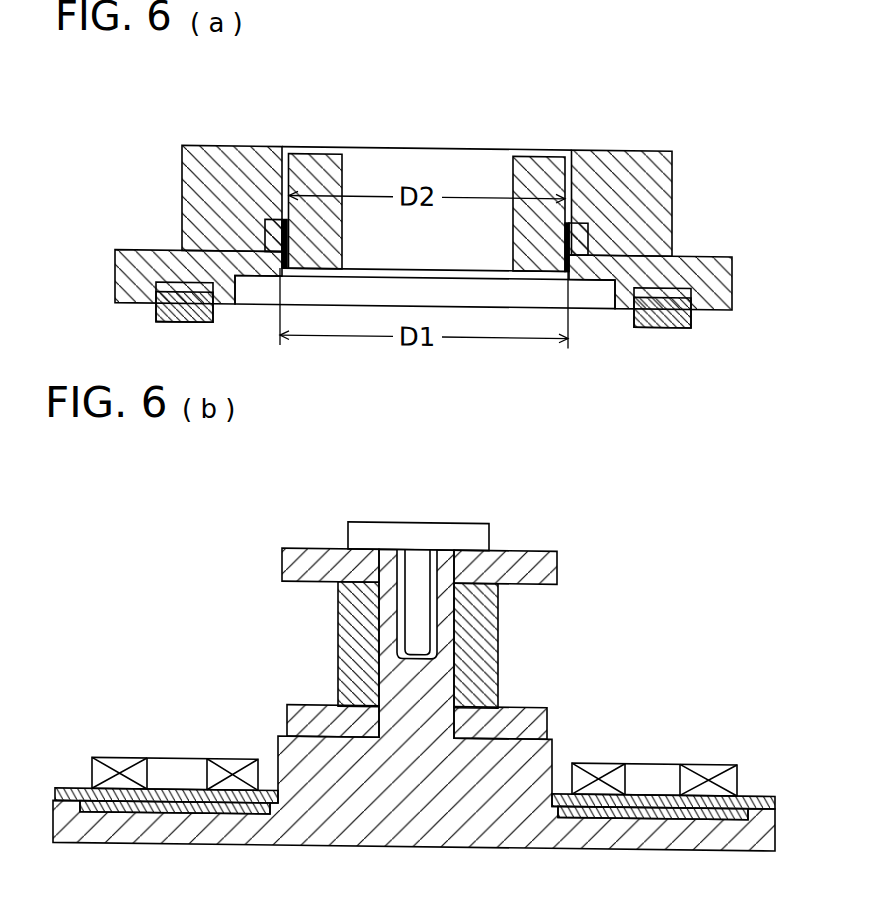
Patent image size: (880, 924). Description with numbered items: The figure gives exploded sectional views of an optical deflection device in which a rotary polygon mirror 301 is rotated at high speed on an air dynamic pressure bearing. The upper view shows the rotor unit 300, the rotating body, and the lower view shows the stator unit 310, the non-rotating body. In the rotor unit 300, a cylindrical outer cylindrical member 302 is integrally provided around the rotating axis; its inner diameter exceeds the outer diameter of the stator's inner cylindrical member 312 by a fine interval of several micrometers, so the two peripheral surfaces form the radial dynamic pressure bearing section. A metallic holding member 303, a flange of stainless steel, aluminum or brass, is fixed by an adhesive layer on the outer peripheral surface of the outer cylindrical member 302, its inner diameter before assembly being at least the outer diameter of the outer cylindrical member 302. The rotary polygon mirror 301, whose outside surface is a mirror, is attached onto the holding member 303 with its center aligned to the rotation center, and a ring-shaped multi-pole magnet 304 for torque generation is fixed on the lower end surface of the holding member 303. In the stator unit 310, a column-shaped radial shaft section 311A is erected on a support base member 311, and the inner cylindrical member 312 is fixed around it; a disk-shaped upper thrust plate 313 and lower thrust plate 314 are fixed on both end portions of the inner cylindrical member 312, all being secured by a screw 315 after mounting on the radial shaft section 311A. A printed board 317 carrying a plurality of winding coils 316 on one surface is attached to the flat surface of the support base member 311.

The rotor unit 300 is at (418, 133).
The rotary polygon mirror 301 is at (617, 148).
The outer cylindrical member 302 is at (527, 155).
The holding member 303 is at (704, 259).
The magnet 304 is at (667, 324).
The stator unit 310 is at (442, 496).
The support base member 311 is at (414, 686).
The radial shaft section 311A is at (390, 565).
The inner cylindrical member 312 is at (497, 638).
The upper thrust plate 313 is at (553, 566).
The lower thrust plate 314 is at (549, 717).
The screw 315 is at (485, 536).
The winding coil 316 is at (714, 759).
The printed board 317 is at (754, 789).